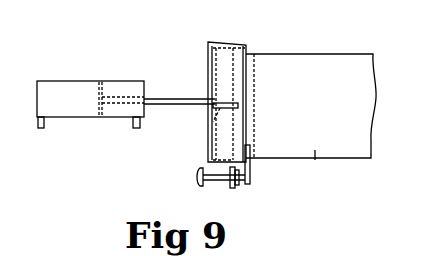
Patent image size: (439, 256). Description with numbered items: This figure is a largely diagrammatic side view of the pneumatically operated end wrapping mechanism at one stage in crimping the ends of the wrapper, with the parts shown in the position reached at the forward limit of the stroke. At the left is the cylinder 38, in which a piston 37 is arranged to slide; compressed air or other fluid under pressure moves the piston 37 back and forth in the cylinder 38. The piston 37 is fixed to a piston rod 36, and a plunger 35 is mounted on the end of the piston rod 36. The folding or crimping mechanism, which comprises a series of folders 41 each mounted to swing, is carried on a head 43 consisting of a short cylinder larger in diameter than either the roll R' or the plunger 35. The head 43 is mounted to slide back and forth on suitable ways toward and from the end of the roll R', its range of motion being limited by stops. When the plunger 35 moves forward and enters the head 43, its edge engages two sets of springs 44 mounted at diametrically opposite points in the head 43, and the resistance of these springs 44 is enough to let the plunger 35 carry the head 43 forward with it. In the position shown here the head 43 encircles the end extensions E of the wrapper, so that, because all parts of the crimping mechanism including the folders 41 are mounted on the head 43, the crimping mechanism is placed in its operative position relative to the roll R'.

The cylinder 38 is at (55, 88).
The piston 37 is at (96, 110).
The piston rod 36 is at (157, 106).
The plunger 35 is at (207, 62).
The head 43 is at (224, 52).
The springs 44 is at (207, 136).
The end extensions of the wrapper E is at (249, 58).
The folders 41 is at (250, 172).
The roll R' is at (324, 171).